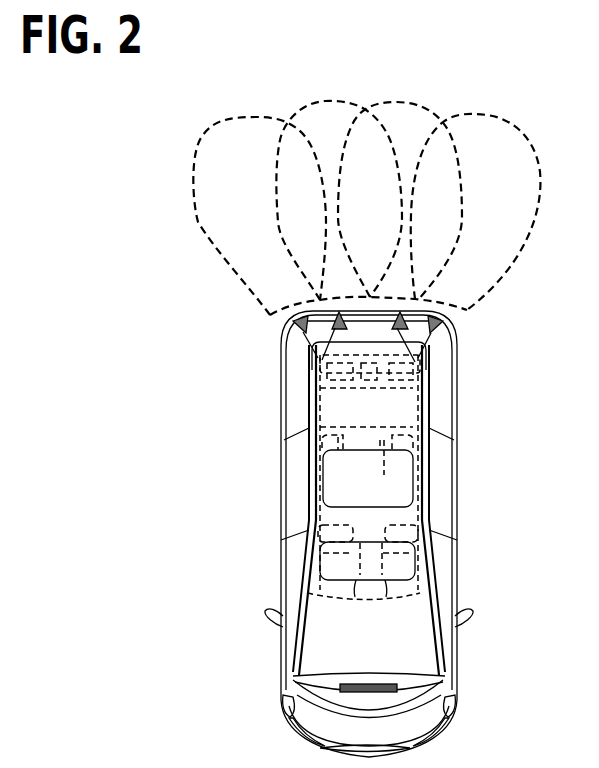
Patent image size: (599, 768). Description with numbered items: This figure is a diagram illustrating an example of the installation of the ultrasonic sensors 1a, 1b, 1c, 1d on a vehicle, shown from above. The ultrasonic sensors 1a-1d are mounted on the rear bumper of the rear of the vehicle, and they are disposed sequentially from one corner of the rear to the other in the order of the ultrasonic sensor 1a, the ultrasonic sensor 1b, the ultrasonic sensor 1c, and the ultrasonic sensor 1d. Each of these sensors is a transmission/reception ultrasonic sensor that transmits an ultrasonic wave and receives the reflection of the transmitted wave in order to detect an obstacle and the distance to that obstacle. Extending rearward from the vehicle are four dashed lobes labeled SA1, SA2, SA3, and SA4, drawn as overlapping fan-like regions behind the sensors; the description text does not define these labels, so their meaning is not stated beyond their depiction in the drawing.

The ultrasonic sensor 1a is at (293, 318).
The ultrasonic sensor 1b is at (318, 362).
The ultrasonic sensor 1c is at (420, 365).
The ultrasonic sensor 1d is at (447, 323).
The detection area of sensor 1a SA1 is at (220, 130).
The detection area of sensor 1b SA2 is at (328, 103).
The detection area of sensor 1c SA3 is at (407, 103).
The detection area of sensor 1d SA4 is at (503, 118).